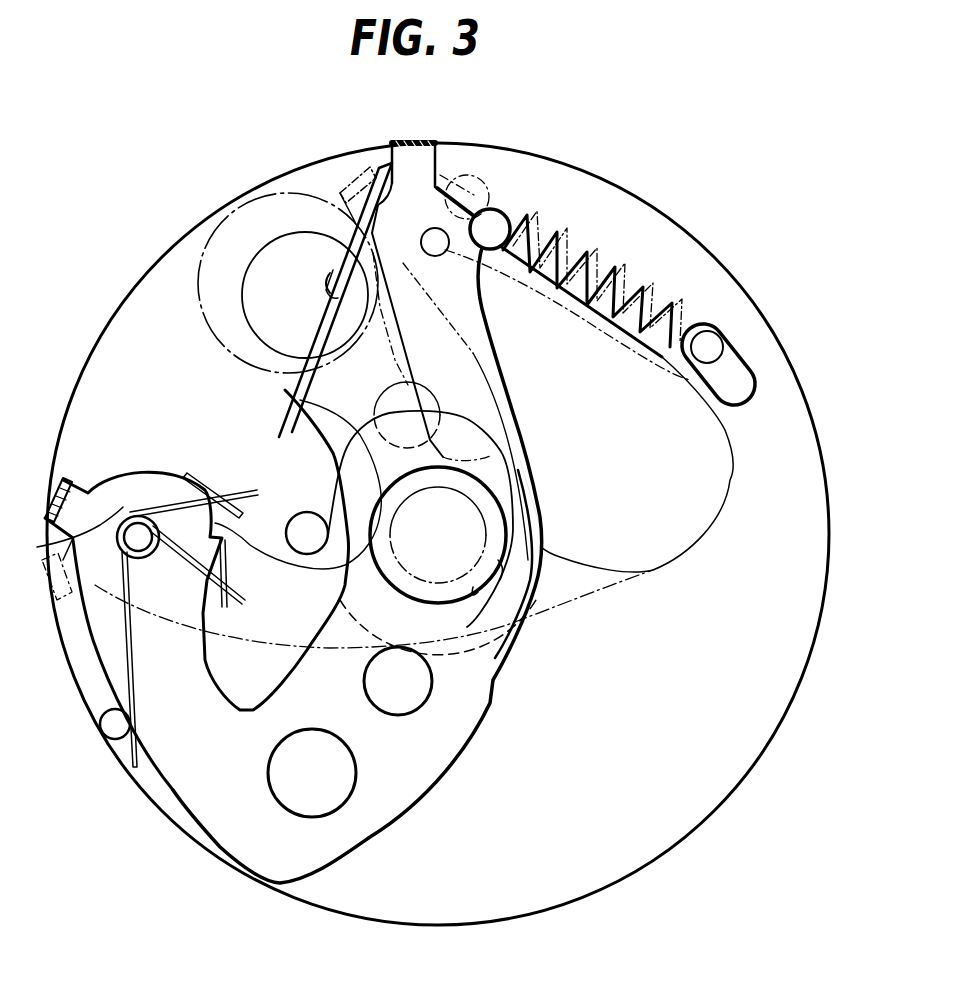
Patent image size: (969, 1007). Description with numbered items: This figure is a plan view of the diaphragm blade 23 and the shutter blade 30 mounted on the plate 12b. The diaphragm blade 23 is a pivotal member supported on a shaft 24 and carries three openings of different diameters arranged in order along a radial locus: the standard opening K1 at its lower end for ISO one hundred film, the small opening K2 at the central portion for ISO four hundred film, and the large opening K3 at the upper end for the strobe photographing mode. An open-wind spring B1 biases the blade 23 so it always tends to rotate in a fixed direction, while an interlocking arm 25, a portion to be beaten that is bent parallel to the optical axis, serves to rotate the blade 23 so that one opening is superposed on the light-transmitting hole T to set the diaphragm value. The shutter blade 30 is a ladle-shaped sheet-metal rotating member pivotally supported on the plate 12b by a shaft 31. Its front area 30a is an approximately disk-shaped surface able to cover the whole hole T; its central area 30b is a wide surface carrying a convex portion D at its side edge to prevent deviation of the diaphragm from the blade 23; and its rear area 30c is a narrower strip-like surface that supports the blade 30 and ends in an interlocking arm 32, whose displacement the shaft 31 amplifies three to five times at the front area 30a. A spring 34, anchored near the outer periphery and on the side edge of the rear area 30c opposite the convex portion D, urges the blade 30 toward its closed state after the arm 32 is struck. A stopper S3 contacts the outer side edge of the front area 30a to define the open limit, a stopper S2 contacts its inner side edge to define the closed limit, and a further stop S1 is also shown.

The plate 12b is at (628, 865).
The diaphragm blade 23 is at (206, 803).
The shaft 24 is at (48, 538).
The interlocking arm 25 is at (60, 485).
The shutter blade 30 is at (543, 423).
The front area 30a is at (541, 450).
The central area 30b is at (297, 368).
The rear area 30c is at (337, 212).
The shaft 31 is at (433, 238).
The interlocking arm 32 is at (420, 143).
The spring 34 is at (618, 285).
The open-wind spring B1 is at (125, 557).
The convex portion D is at (318, 405).
The standard opening K1 is at (355, 782).
The small opening K2 is at (425, 695).
The large opening K3 is at (500, 562).
The pin S1 is at (110, 716).
The stopper S2 is at (306, 524).
The stopper S3 is at (731, 375).
The light-transmitting hole T is at (503, 592).